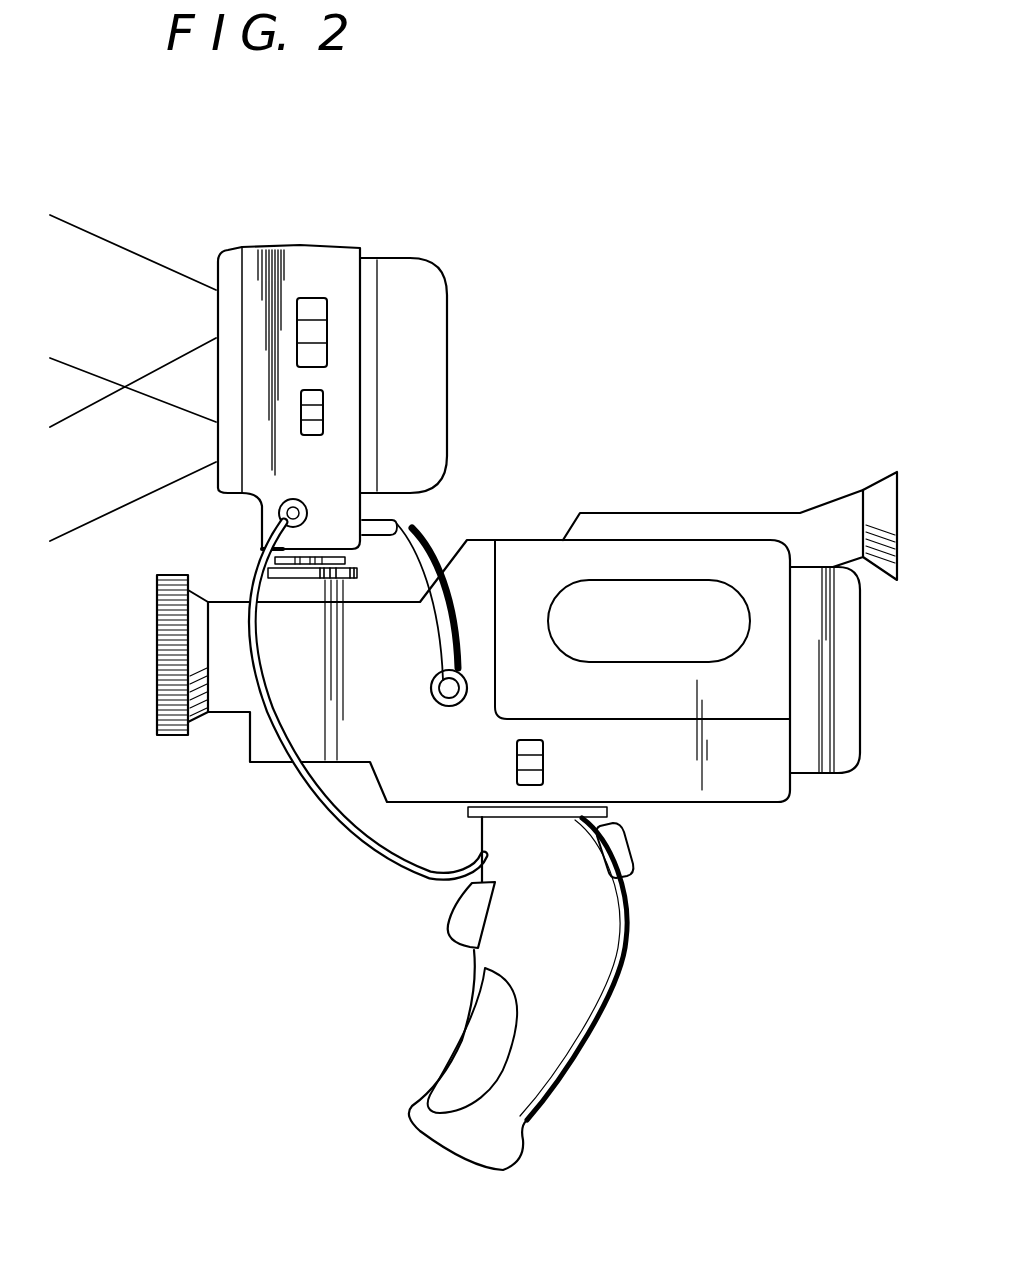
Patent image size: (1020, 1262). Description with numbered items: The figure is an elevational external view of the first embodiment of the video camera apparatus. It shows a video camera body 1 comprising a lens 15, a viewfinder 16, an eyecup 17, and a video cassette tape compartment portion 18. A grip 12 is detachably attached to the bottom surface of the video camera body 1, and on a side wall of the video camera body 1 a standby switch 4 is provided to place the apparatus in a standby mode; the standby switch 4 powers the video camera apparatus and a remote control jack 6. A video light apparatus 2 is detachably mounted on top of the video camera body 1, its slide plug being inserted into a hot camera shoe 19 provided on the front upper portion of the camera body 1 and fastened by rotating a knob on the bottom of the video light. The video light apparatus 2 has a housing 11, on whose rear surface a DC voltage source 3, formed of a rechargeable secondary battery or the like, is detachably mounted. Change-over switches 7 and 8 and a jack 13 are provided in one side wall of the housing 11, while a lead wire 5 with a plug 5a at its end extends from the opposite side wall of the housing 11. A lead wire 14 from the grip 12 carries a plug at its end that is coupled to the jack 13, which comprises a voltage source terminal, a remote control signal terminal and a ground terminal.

The video camera body 1 is at (747, 804).
The video light apparatus 2 is at (352, 252).
The DC voltage source 3 is at (437, 356).
The standby switch 4 is at (533, 785).
The lead wire 5 is at (424, 545).
The plug 5a is at (452, 706).
The remote control jack 6 is at (432, 703).
The change-over switch 7 is at (320, 328).
The change-over switch 8 is at (313, 415).
The housing 11 is at (293, 247).
The grip 12 is at (548, 1053).
The jack 13 is at (279, 513).
The lead wire 14 is at (307, 780).
The lens 15 is at (157, 686).
The viewfinder 16 is at (580, 513).
The eyecup 17 is at (882, 472).
The video cassette tape compartment portion 18 is at (775, 686).
The camera shoe 19 is at (315, 578).